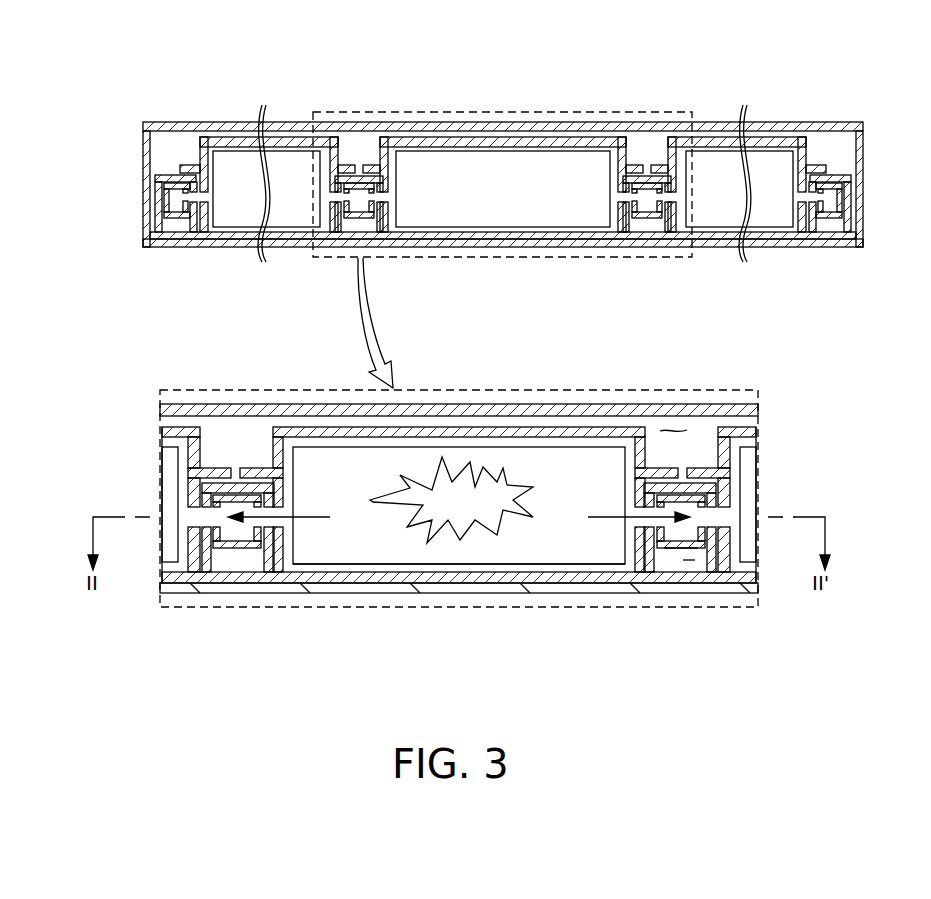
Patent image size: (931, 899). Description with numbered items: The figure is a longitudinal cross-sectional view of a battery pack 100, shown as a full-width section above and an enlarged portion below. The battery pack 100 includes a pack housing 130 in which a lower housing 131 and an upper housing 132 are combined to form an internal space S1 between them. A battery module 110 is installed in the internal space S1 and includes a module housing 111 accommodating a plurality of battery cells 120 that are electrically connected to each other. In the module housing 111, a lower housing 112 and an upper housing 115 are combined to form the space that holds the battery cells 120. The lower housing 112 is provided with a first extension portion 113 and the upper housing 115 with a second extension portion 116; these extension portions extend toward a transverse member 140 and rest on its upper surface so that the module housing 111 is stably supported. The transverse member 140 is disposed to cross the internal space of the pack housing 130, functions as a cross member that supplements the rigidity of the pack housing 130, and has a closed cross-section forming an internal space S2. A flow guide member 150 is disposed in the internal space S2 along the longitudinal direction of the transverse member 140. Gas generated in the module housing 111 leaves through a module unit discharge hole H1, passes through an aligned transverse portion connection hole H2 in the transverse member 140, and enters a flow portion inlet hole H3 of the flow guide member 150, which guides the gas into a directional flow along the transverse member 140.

The battery pack 100 is at (183, 32).
The battery module 110 is at (505, 137).
The module housing 111 is at (512, 651).
The lower housing 112 is at (507, 577).
The first extension portion 113 is at (730, 477).
The upper housing 115 is at (473, 432).
The second extension portion 116 is at (708, 468).
The battery cell 120 is at (368, 542).
The pack housing 130 is at (90, 95).
The lower housing 131 is at (147, 153).
The upper housing 132 is at (183, 125).
The transverse member 140 is at (215, 583).
The flow guide member 150 is at (242, 547).
The module unit discharge hole H1 is at (637, 523).
The transverse portion connection hole H2 is at (670, 547).
The flow portion inlet hole H3 is at (302, 518).
The internal space S1 is at (672, 428).
The internal space S2 is at (687, 562).